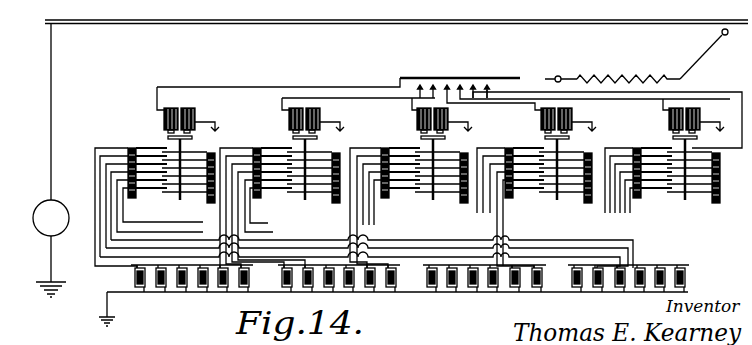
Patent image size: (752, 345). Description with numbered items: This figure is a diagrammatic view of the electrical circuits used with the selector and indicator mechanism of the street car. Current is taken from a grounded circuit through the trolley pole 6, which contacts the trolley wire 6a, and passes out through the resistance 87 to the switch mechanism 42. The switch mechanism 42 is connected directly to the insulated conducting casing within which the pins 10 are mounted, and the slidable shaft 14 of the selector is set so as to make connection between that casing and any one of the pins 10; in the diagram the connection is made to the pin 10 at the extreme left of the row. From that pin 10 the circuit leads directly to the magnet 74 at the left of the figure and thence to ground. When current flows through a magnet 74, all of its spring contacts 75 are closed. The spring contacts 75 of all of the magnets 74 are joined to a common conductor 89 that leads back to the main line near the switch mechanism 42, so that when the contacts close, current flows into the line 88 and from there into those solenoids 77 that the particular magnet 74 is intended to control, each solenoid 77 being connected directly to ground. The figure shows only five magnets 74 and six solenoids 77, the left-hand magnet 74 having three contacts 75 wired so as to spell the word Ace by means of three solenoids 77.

The trolley pole 6 is at (703, 56).
The trolley wire 6a is at (541, 21).
The pins 10 is at (399, 87).
The shaft 14 is at (384, 79).
The switch mechanism 42 is at (562, 77).
The magnet 74 is at (197, 113).
The spring contacts 75 is at (151, 167).
The solenoids 77 is at (142, 288).
The resistance 87 is at (637, 77).
The line 88 is at (117, 195).
The common conductor 89 is at (532, 78).